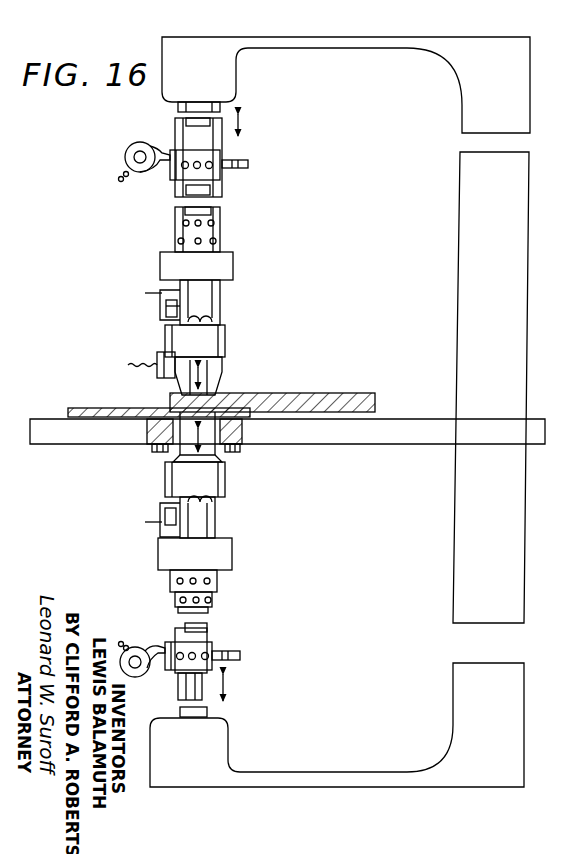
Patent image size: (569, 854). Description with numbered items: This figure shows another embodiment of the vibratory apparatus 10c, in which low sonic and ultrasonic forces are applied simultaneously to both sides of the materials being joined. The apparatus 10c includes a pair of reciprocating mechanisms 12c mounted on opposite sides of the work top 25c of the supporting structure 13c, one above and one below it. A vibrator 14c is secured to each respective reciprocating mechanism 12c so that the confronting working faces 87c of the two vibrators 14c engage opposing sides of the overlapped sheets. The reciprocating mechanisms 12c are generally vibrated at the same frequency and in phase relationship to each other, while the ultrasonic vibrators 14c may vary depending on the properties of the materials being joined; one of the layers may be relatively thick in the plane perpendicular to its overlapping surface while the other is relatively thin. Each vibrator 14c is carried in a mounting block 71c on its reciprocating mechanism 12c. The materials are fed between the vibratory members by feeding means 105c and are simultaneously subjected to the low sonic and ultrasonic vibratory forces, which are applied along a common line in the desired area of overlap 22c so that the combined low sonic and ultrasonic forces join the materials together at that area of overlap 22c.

The reciprocating mechanism 12c is at (157, 98).
The vibratory apparatus 10c is at (150, 244).
The vibrator 14c is at (232, 237).
The mounting block 71c is at (234, 346).
The feeding means 105c is at (160, 350).
The area of overlap 22c is at (175, 407).
The working face 87c is at (232, 397).
The supporting structure 13c is at (42, 439).
The work top 25c is at (413, 433).